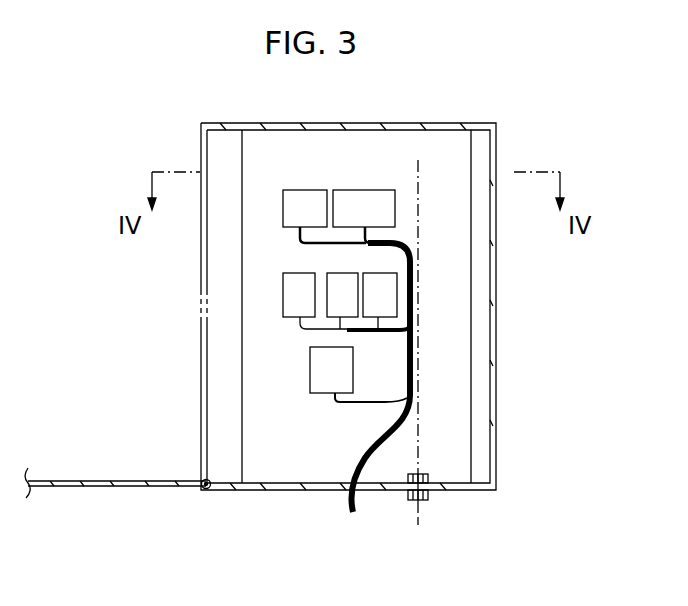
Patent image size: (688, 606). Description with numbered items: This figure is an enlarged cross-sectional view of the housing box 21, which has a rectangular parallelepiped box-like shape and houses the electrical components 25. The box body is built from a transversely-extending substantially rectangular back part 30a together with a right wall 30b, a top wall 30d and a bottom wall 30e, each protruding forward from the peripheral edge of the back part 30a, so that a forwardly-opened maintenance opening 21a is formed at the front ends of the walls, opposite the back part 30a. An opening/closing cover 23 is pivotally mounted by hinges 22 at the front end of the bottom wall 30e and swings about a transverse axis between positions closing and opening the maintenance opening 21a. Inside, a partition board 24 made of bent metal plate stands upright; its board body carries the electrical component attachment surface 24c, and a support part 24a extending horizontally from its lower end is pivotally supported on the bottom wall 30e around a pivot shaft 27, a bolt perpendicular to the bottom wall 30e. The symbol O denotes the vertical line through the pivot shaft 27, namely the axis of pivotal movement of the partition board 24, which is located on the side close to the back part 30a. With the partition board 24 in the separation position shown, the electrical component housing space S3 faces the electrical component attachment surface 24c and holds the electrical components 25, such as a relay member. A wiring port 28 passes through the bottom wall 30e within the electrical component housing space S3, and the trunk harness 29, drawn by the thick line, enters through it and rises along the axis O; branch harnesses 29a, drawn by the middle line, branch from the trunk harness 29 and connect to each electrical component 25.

The housing box 21 is at (500, 285).
The maintenance opening 21a is at (216, 280).
The hinge 22 is at (203, 492).
The opening/closing cover 23 is at (201, 372).
The partition board 24 is at (470, 386).
The support part 24a is at (296, 483).
The electrical component attachment surface 24c is at (385, 150).
The electrical component 25 is at (365, 190).
The pivot shaft 27 is at (424, 500).
The wiring port 28 is at (338, 490).
The trunk harness 29 is at (363, 452).
The branch harness 29a is at (298, 240).
The back part 30a is at (495, 458).
The right wall 30b is at (222, 150).
The top wall 30d is at (432, 123).
The bottom wall 30e is at (226, 492).
The axis of pivotal movement O is at (418, 364).
The electrical component housing space S3 is at (298, 454).